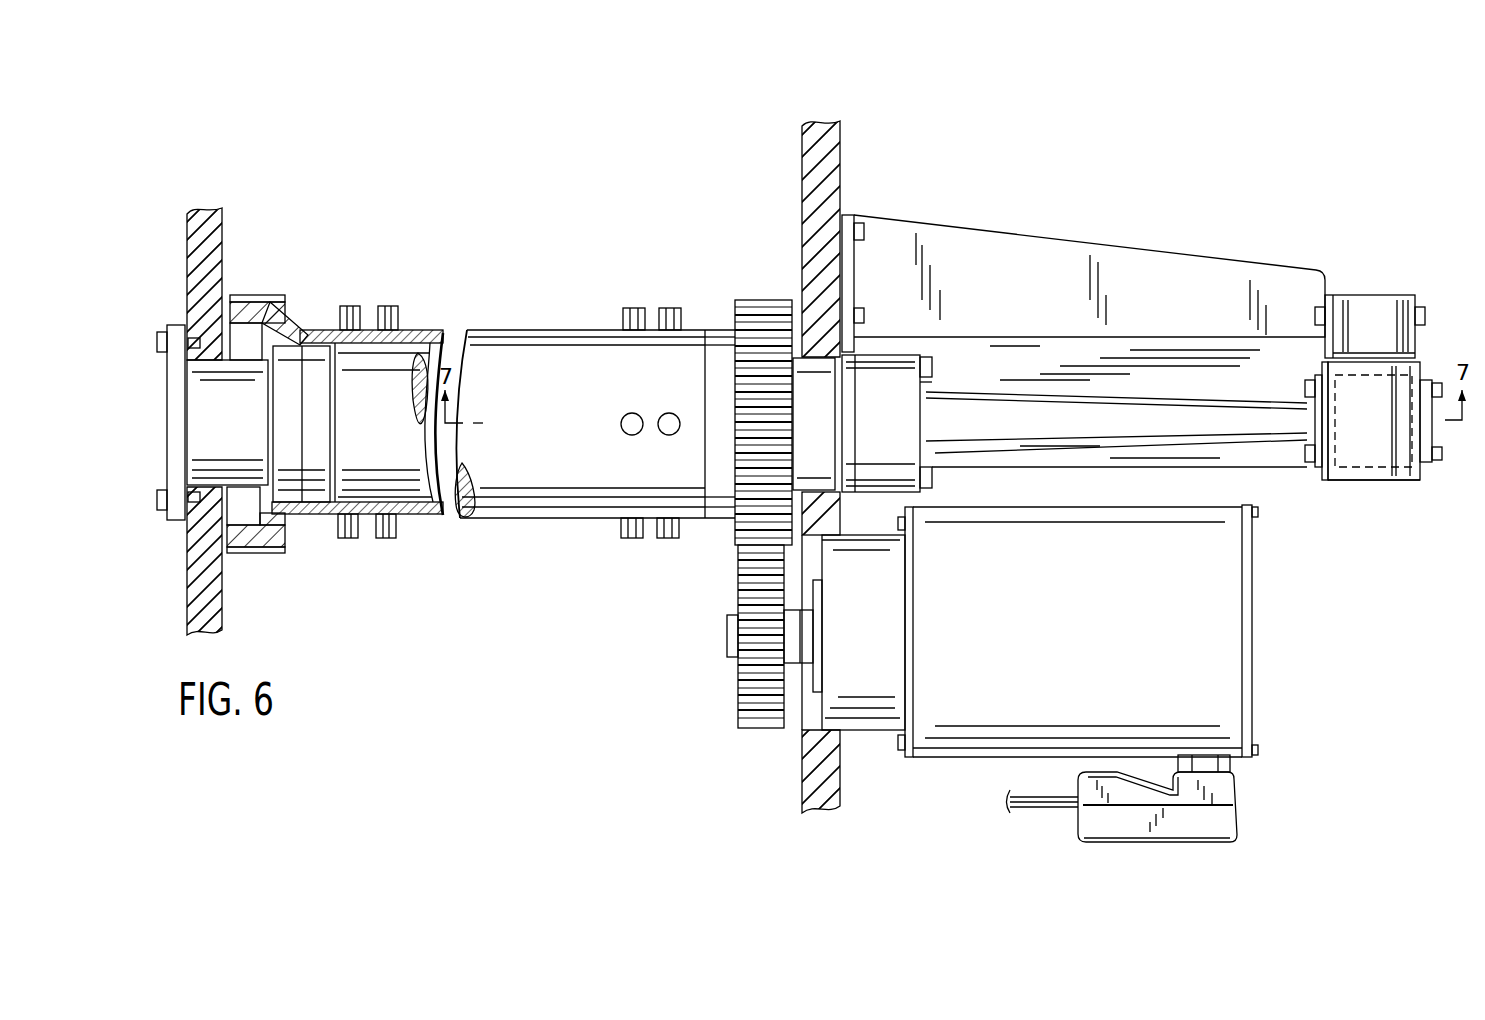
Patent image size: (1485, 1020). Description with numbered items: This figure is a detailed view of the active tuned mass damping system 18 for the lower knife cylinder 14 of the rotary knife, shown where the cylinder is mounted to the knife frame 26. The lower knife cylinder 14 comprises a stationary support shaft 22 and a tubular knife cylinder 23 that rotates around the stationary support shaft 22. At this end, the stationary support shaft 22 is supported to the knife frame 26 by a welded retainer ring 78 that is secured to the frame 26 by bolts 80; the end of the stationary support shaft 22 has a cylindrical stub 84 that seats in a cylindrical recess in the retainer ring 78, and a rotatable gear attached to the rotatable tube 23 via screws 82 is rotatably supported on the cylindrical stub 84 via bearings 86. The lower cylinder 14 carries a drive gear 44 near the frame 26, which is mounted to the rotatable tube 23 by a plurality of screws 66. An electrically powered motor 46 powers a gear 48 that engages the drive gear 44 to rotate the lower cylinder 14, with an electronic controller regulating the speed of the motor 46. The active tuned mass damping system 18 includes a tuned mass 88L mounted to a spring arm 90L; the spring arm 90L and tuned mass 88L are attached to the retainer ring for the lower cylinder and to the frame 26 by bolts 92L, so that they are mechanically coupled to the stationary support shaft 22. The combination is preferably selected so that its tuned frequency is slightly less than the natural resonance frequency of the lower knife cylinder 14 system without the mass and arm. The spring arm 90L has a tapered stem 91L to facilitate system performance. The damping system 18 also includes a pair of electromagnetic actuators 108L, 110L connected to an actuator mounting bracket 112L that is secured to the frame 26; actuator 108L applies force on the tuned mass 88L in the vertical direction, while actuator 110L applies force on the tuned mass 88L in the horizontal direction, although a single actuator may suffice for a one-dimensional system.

The knife frame 26 is at (206, 214).
The bolts 80 is at (165, 330).
The retainer ring 78 is at (183, 405).
The cylindrical stub 84 is at (258, 535).
The bearings 86 is at (293, 488).
The tubular knife cylinder 23 is at (332, 332).
The screws 82 is at (250, 308).
The stationary support shaft 22 is at (412, 331).
The lower knife cylinder 14 is at (538, 327).
The screws 66 is at (634, 308).
The drive gear 44 is at (744, 302).
The gear 48 is at (738, 690).
The bolts 92L is at (934, 383).
The actuator mounting bracket 112L is at (1136, 256).
The spring arm 90L is at (1126, 440).
The tapered stem 91L is at (1056, 445).
The electromagnetic actuator 110L is at (1370, 298).
The tuned mass 88L is at (1353, 460).
The electromagnetic actuator 108L is at (1406, 377).
The active tuned mass damping system 18 is at (1373, 485).
The electric motor 46 is at (1242, 618).